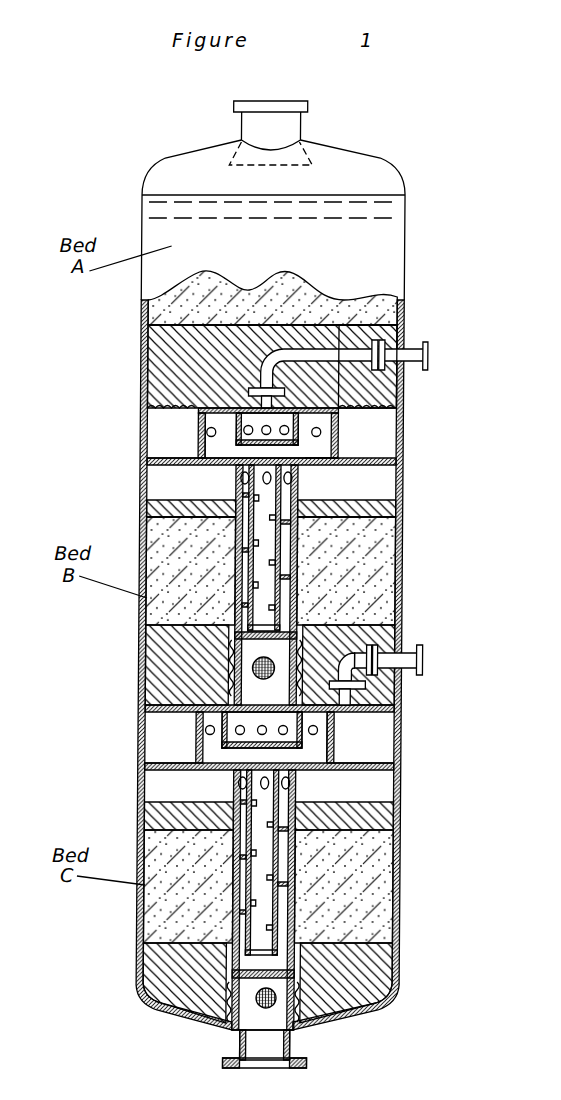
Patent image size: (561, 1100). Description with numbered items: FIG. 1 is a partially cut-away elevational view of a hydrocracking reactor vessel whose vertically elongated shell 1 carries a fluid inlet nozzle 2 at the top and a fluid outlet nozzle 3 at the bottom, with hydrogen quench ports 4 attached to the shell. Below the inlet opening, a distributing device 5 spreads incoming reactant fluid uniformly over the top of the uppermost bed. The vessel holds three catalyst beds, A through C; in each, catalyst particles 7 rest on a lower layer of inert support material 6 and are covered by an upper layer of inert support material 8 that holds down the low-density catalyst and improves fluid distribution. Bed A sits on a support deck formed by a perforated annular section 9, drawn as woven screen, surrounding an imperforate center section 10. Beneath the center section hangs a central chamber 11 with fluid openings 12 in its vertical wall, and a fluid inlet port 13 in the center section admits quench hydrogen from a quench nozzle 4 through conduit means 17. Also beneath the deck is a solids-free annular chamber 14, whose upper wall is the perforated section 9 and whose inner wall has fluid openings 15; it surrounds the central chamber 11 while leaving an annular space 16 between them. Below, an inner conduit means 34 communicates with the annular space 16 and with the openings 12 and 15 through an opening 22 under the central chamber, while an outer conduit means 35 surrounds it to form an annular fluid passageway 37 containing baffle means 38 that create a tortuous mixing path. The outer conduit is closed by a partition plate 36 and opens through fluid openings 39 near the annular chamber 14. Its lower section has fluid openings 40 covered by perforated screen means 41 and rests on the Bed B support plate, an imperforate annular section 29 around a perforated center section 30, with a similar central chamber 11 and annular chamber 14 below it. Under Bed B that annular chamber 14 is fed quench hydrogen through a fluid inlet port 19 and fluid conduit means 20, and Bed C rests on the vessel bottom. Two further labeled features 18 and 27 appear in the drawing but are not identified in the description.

The shell 1 is at (405, 282).
The fluid inlet nozzle 2 is at (305, 106).
The fluid outlet nozzle 3 is at (312, 1063).
The hydrogen quench port 4 is at (425, 347).
The distributing device 5 is at (229, 165).
The inert support material 6 is at (150, 345).
The catalyst particles 7 is at (165, 323).
The inert support material 8 is at (150, 210).
The perforated annular section 9 is at (152, 408).
The imperforate center section 10 is at (334, 410).
The central chamber 11 is at (206, 391).
The fluid openings 12 is at (290, 410).
The fluid inlet port 13 is at (252, 396).
The annular chamber 14 is at (180, 437).
The fluid openings 15 is at (200, 430).
The annular space 16 is at (330, 457).
The conduit means 17 is at (262, 345).
The redistribution space 18 is at (177, 493).
The fluid inlet port 19 is at (365, 700).
The fluid conduit means 20 is at (373, 628).
The opening 22 is at (307, 777).
The gas chamber 27 is at (302, 475).
The imperforate annular section 29 is at (149, 708).
The perforated center section 30 is at (267, 680).
The inner conduit means 34 is at (285, 560).
The outer conduit means 35 is at (300, 598).
The partition plate 36 is at (238, 607).
The annular fluid passageway 37 is at (238, 568).
The baffle means 38 is at (232, 530).
The fluid openings 39 is at (238, 489).
The fluid openings 40 is at (256, 662).
The perforated screen means 41 is at (306, 655).